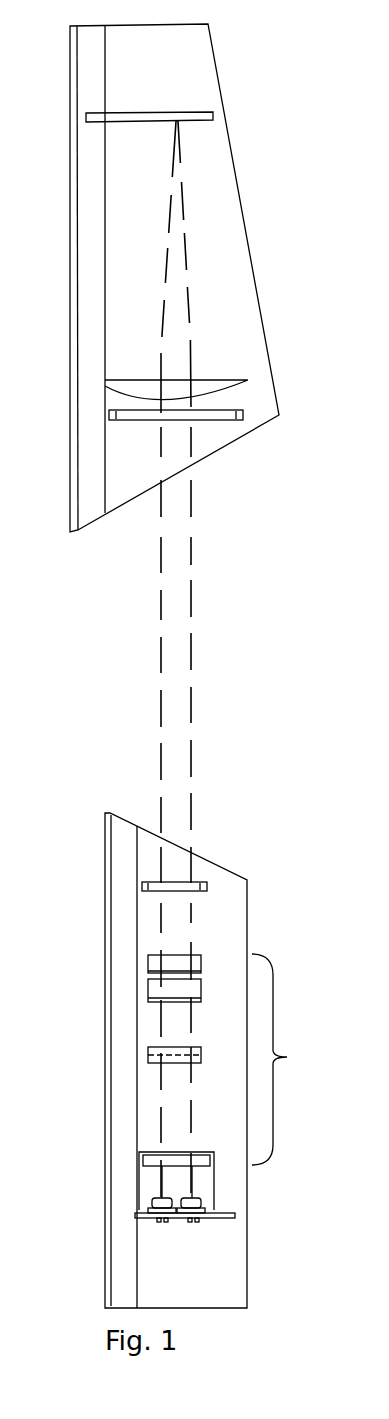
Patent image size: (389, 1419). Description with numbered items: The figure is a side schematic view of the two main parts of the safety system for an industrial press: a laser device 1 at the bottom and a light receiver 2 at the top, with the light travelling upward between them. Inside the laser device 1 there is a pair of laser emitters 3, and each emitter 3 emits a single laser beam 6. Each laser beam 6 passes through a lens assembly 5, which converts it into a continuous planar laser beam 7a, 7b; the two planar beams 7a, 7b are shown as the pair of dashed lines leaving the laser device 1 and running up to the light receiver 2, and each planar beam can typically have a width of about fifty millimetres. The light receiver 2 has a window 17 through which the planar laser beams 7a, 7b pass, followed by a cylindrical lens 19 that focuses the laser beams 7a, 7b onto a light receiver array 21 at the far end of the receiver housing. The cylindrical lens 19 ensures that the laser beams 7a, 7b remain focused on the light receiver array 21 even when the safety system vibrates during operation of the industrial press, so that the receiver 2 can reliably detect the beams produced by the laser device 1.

The laser device 1 is at (105, 1058).
The light receiver 2 is at (70, 283).
The laser emitters 3 is at (137, 1210).
The lens assembly 5 is at (287, 1057).
The laser beam 6 is at (150, 1182).
The planar laser beam 7a is at (195, 600).
The planar laser beam 7b is at (158, 610).
The window 17 is at (232, 418).
The cylindrical lens 19 is at (232, 373).
The light receiver array 21 is at (203, 120).